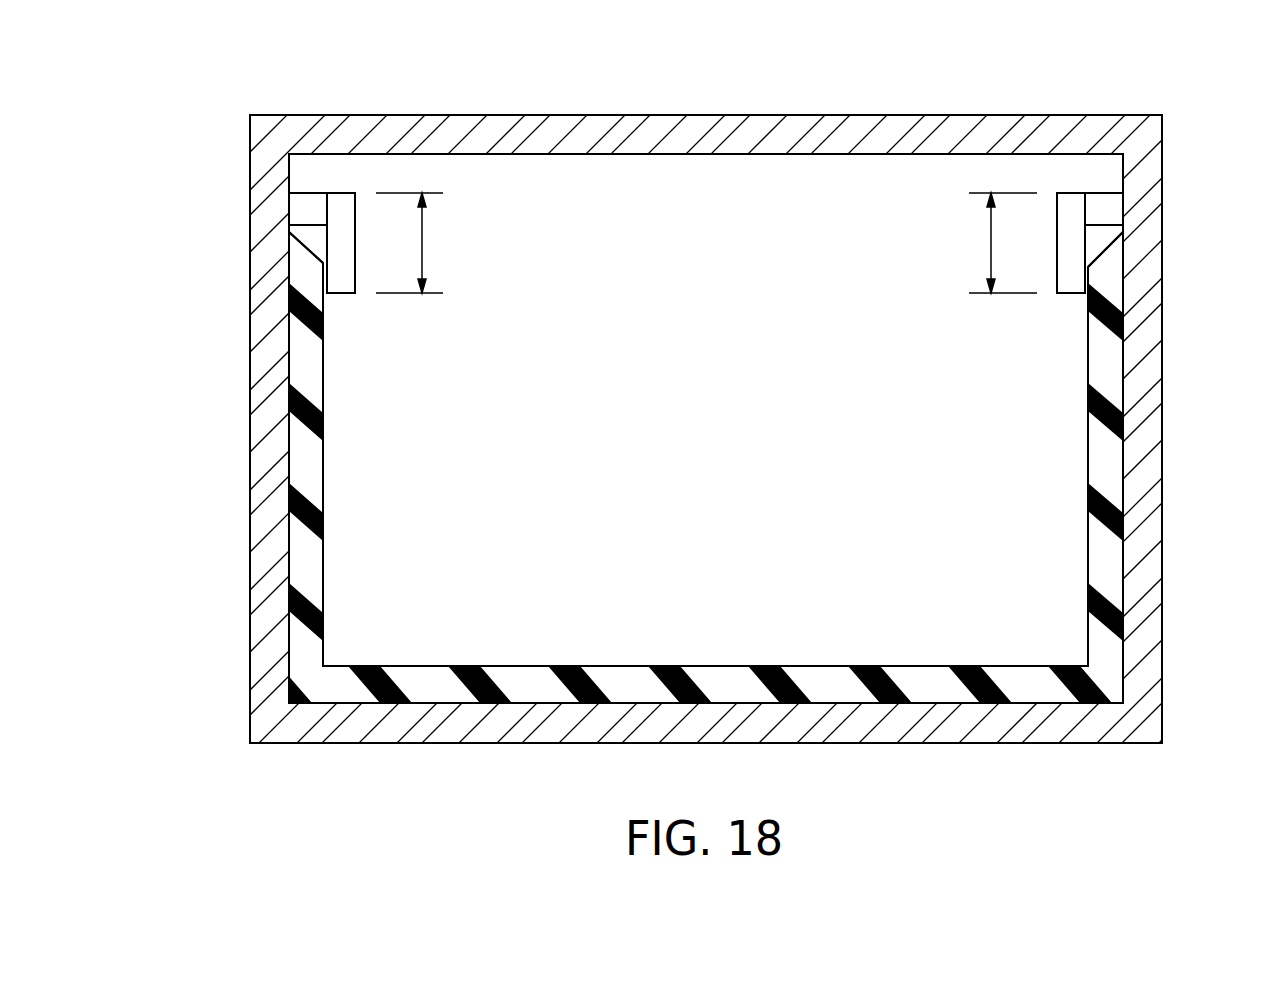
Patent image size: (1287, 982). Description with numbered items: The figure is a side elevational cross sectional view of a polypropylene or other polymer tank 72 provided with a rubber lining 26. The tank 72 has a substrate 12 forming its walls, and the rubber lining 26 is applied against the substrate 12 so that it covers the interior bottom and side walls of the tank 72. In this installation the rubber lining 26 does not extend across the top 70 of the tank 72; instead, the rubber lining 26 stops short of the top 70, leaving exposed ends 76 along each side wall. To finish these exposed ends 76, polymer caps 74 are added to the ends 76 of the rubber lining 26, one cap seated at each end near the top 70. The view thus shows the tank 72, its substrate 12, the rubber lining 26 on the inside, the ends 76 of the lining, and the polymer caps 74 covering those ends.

The substrate 12 is at (249, 470).
The rubber lining 26 is at (625, 680).
The top 70 is at (708, 115).
The tank 72 is at (1163, 500).
The polymer caps 74 is at (341, 208).
The ends 76 is at (303, 268).